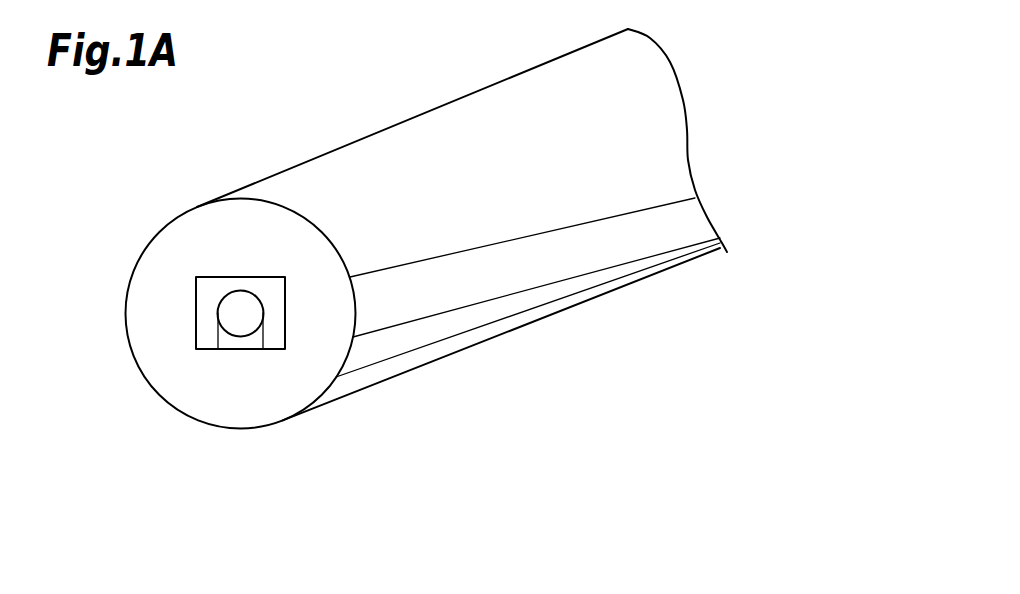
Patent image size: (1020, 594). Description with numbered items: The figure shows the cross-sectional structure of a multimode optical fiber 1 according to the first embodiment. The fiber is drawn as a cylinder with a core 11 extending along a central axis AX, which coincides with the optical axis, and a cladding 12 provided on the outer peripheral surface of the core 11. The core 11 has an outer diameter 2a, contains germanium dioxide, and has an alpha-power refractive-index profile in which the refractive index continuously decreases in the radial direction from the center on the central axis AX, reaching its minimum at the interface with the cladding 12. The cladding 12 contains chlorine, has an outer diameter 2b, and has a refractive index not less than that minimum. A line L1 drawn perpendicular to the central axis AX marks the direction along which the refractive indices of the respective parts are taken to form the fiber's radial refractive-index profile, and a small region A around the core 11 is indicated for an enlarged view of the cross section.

The multimode optical fiber 1 is at (493, 66).
The core 11 is at (243, 290).
The cladding 12 is at (165, 246).
The region A is at (285, 350).
The central axis AX is at (810, 82).
The line L1 is at (55, 313).
The outer diameter of the core 2a is at (218, 350).
The outer diameter of the cladding 2b is at (127, 313).